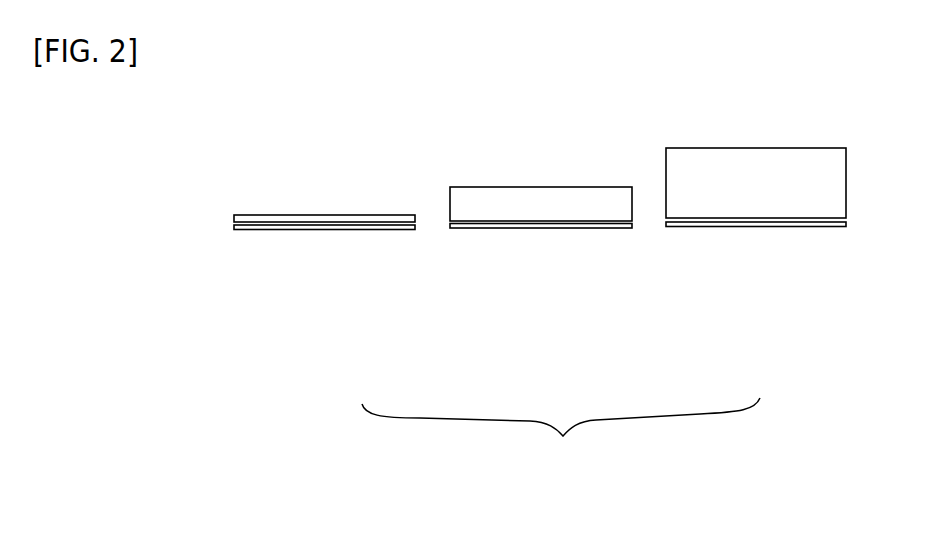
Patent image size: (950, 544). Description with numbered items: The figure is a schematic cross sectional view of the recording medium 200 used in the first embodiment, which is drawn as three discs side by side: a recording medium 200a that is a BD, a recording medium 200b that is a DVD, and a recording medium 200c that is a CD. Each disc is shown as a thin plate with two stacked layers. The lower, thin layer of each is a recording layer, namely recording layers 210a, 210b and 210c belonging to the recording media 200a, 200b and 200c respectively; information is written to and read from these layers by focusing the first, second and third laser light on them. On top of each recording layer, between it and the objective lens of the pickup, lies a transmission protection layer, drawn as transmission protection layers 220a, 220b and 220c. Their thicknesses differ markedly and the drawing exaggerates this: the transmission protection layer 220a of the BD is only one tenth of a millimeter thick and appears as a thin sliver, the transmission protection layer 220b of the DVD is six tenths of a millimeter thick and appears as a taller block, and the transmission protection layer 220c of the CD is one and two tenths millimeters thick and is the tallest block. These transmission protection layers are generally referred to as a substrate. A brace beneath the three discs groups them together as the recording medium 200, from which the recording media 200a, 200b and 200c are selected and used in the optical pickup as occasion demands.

The recording medium 200 is at (561, 434).
The recording medium (BD) 200a is at (331, 276).
The recording medium (DVD) 200b is at (527, 261).
The recording medium (CD) 200c is at (741, 243).
The recording layer 210a is at (252, 230).
The recording layer 210b is at (555, 303).
The recording layer 210c is at (756, 255).
The transmission protection layer 220a is at (278, 215).
The transmission protection layer 220b is at (480, 186).
The transmission protection layer 220c is at (695, 148).